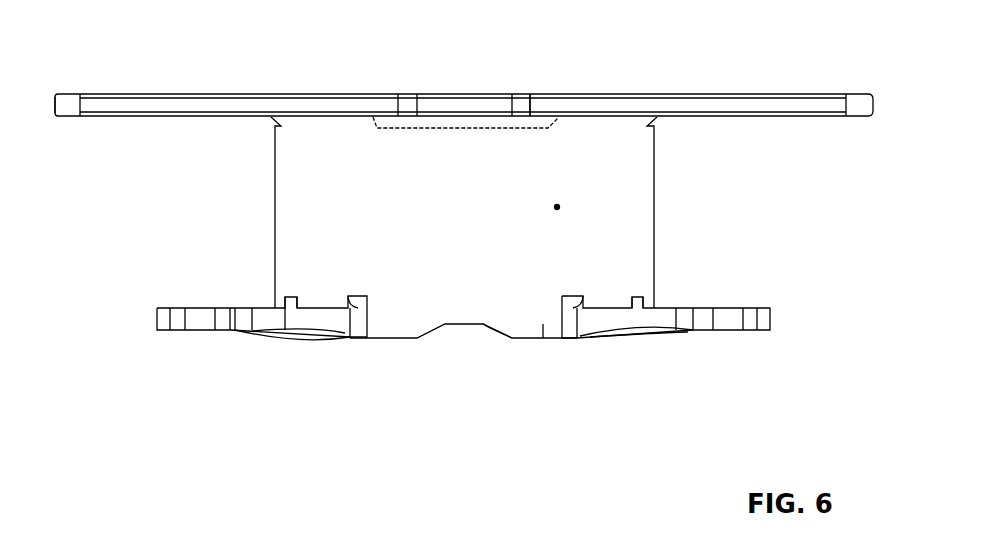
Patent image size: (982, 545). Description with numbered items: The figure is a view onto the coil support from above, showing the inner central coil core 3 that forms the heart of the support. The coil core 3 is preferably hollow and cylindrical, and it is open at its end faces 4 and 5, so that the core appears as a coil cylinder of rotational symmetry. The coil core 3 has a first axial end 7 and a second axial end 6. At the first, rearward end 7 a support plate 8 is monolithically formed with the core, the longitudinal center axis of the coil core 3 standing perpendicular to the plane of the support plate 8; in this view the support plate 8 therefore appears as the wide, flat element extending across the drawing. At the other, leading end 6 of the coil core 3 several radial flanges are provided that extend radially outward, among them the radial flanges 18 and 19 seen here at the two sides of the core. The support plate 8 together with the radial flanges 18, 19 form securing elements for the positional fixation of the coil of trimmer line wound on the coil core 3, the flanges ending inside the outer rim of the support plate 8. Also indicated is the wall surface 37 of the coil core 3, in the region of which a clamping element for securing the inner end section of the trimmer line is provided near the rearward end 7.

The end face 5 is at (451, 88).
The first axial end 7 is at (558, 117).
The support plate 8 is at (176, 105).
The wall surface 37 is at (557, 207).
The coil core 3 is at (655, 278).
The end face 4 is at (407, 355).
The second axial end 6 is at (547, 338).
The radial flange 18 is at (240, 330).
The radial flange 19 is at (720, 330).